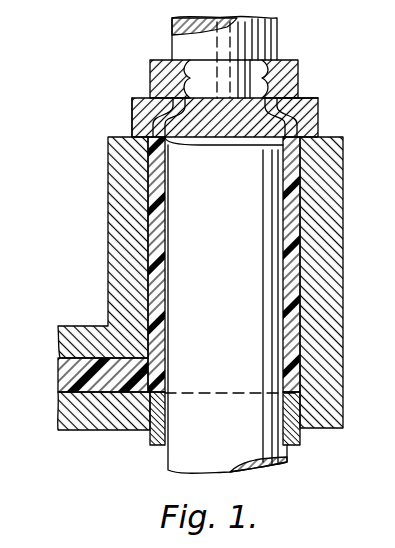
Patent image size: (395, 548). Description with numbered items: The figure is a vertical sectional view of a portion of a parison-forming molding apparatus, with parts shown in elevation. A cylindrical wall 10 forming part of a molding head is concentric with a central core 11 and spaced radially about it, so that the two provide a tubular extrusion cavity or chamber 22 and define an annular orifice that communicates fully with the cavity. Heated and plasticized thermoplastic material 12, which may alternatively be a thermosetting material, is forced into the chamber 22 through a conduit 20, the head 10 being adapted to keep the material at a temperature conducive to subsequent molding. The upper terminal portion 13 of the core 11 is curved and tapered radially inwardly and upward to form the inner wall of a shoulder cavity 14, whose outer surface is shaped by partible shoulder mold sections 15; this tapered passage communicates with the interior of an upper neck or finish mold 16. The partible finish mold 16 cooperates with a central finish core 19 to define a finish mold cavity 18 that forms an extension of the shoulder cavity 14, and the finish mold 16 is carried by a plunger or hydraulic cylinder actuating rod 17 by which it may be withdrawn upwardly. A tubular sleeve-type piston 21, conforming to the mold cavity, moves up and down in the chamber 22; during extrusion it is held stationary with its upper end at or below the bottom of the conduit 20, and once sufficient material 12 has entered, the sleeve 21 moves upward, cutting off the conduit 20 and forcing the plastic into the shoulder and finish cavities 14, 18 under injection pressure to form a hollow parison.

The cylindrical wall 10 is at (325, 251).
The central core 11 is at (253, 442).
The thermoplastic material 12 is at (68, 375).
The upper terminal portion 13 is at (302, 122).
The shoulder cavity 14 is at (312, 99).
The shoulder mold sections 15 is at (140, 115).
The neck or finish mold 16 is at (256, 80).
The hydraulic cylinder actuating rod 17 is at (185, 40).
The finish mold cavity 18 is at (187, 71).
The central finish core 19 is at (262, 77).
The conduit 20 is at (122, 392).
The sleeve-type piston 21 is at (158, 441).
The extrusion cavity 22 is at (300, 205).